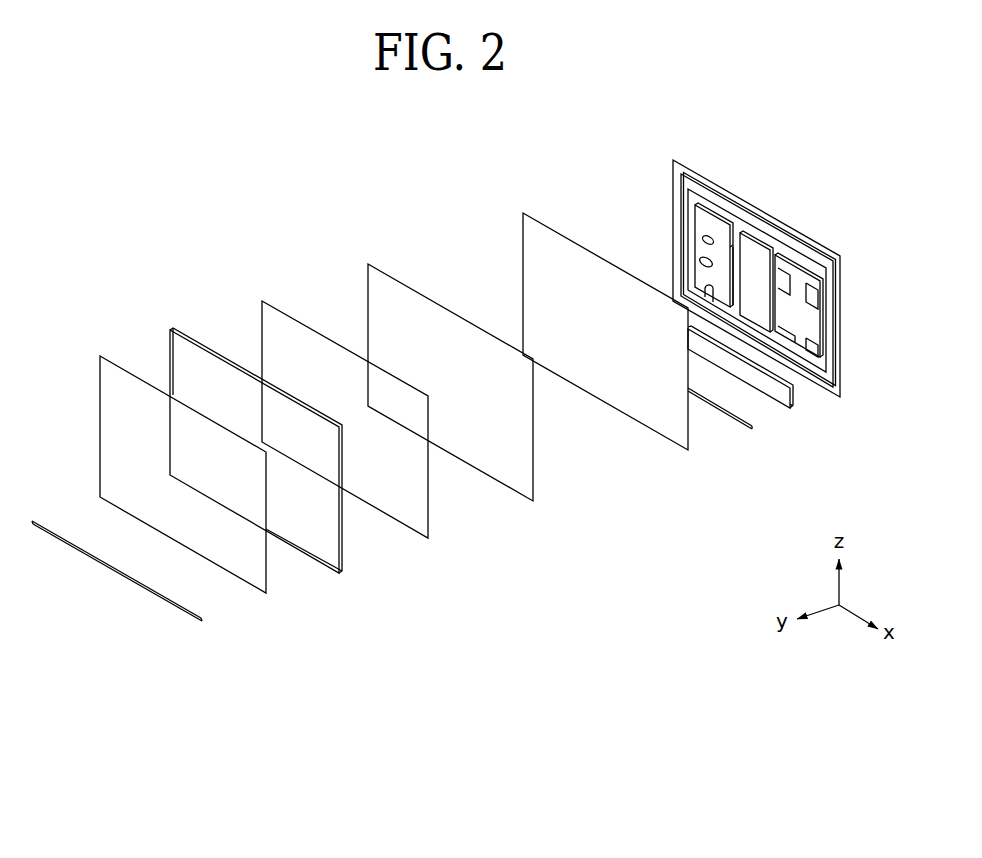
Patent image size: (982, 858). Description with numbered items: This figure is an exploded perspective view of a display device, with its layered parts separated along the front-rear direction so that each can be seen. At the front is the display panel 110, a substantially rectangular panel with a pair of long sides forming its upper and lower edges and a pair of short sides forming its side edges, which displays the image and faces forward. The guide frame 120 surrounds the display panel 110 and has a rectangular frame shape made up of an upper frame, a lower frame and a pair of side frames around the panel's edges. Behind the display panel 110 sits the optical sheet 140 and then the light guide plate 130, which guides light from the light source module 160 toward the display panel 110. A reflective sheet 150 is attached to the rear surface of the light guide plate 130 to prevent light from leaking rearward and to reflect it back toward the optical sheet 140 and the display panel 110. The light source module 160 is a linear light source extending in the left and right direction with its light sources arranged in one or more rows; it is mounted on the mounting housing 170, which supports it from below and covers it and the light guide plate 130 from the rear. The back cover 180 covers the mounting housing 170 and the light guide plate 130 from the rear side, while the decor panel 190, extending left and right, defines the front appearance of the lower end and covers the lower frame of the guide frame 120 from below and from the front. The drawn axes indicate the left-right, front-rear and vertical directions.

The display panel 110 is at (100, 350).
The guide frame 120 is at (170, 325).
The light guide plate 130 is at (368, 257).
The optical sheet 140 is at (262, 295).
The reflective sheet 150 is at (523, 206).
The light source module 160 is at (732, 426).
The mounting housing 170 is at (797, 421).
The back cover 180 is at (673, 153).
The decor panel 190 is at (186, 625).